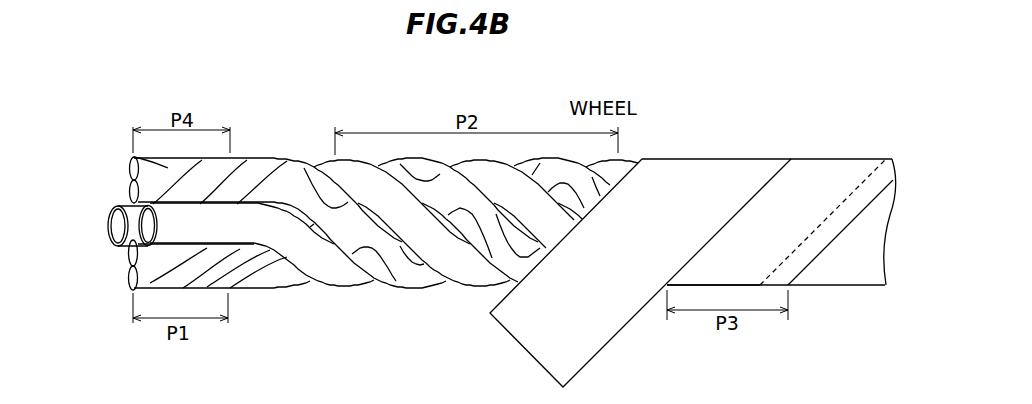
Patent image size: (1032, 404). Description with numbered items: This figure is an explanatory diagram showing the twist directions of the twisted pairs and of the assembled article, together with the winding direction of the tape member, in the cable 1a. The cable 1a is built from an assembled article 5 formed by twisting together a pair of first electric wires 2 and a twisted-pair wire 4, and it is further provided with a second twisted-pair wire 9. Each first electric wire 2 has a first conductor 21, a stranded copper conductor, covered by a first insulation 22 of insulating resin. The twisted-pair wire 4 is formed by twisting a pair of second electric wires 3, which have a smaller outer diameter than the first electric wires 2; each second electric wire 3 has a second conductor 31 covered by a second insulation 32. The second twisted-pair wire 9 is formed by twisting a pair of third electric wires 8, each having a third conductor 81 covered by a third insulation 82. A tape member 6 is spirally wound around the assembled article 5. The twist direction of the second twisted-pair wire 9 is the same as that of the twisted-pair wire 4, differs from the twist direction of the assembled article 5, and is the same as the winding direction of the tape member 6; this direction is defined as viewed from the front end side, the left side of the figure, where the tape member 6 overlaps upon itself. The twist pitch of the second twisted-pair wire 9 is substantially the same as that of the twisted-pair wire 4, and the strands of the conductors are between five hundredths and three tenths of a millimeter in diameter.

The cable 1a is at (696, 224).
The first electric wire 2 is at (343, 252).
The first conductor 21 is at (117, 225).
The first insulation 22 is at (132, 220).
The second electric wire 3 is at (303, 248).
The second conductor 31 is at (133, 278).
The second insulation 32 is at (147, 273).
The twisted-pair wire 4 is at (337, 251).
The assembled article 5 is at (343, 209).
The tape member 6 is at (852, 278).
The third electric wire 8 is at (336, 203).
The third conductor 81 is at (136, 174).
The third insulation 82 is at (143, 167).
The second twisted-pair wire 9 is at (442, 191).